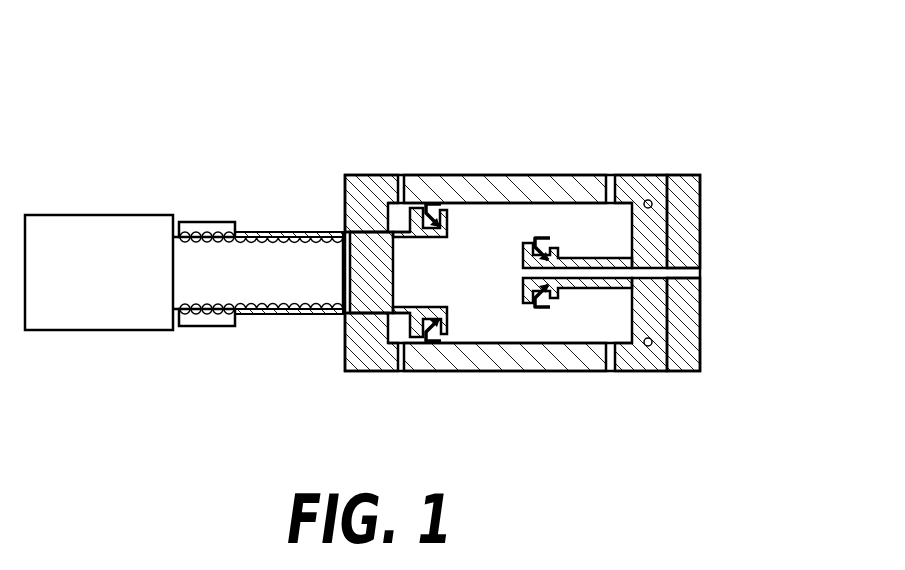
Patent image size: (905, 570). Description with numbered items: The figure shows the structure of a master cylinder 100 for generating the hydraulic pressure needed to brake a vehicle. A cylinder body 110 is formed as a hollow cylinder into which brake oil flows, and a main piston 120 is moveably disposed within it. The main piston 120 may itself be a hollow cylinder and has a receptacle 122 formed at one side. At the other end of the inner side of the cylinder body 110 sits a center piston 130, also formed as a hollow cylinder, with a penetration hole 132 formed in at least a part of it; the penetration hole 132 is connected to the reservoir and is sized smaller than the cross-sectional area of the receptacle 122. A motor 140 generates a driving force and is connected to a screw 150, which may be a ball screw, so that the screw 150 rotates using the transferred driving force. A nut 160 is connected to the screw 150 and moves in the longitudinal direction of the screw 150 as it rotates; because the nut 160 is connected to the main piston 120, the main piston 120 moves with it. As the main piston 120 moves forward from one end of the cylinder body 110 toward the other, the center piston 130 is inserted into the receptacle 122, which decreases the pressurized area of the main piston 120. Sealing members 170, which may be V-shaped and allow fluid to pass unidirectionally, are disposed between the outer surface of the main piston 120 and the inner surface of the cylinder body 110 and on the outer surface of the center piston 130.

The master cylinder 100 is at (70, 44).
The cylinder body 110 is at (647, 178).
The main piston 120 is at (343, 303).
The receptacle 122 is at (445, 275).
The center piston 130 is at (588, 258).
The penetration hole 132 is at (697, 272).
The motor 140 is at (100, 213).
The screw 150 is at (272, 247).
The nut 160 is at (204, 226).
The sealing member 170 is at (428, 207).